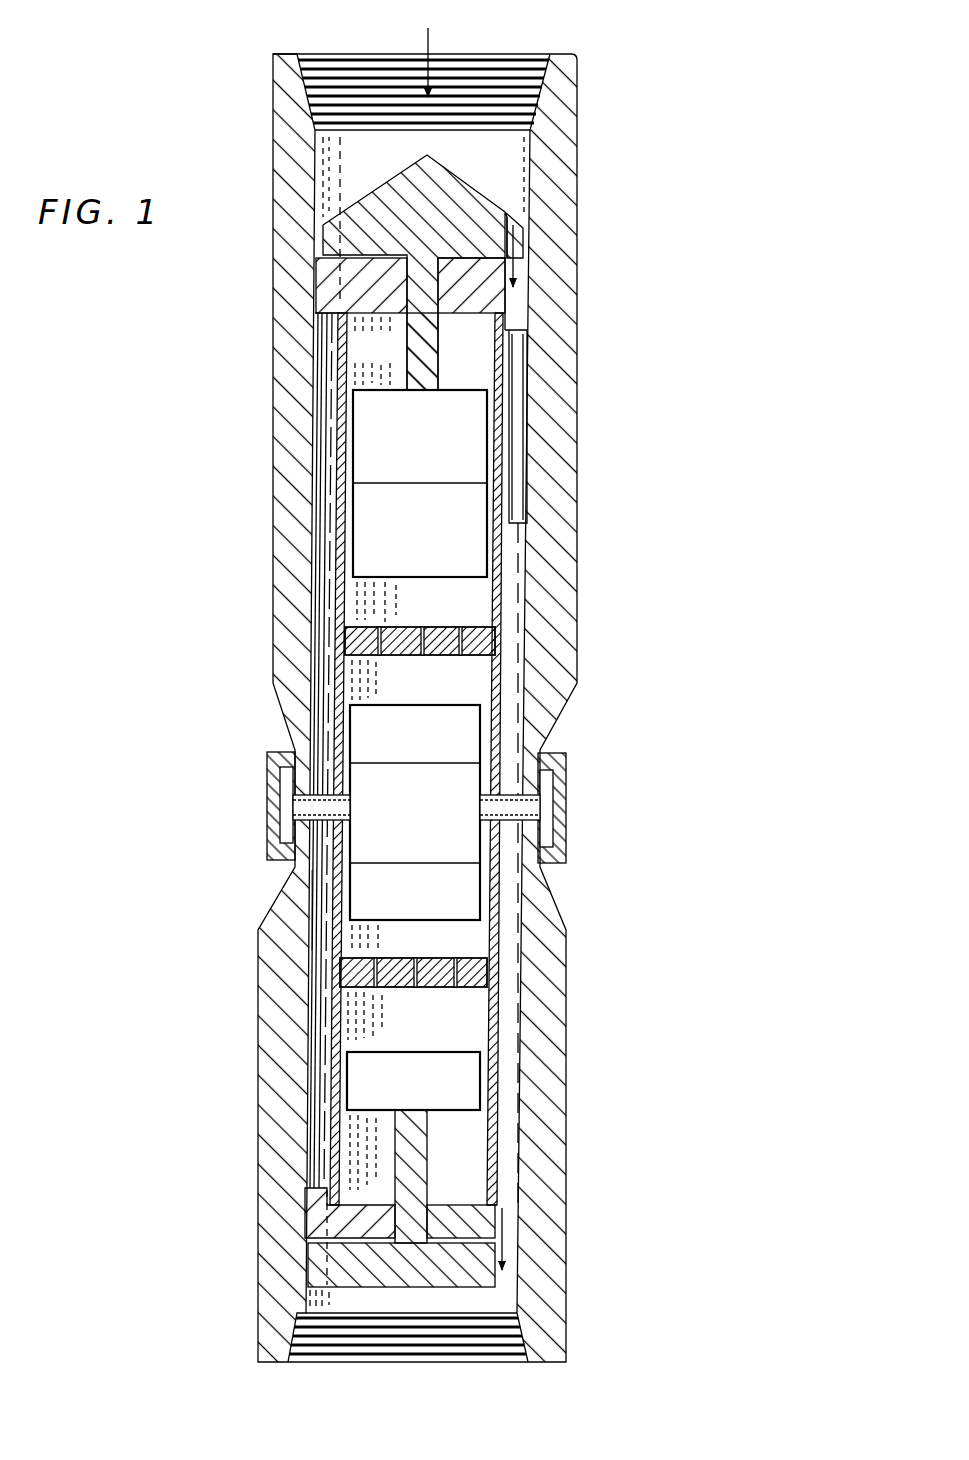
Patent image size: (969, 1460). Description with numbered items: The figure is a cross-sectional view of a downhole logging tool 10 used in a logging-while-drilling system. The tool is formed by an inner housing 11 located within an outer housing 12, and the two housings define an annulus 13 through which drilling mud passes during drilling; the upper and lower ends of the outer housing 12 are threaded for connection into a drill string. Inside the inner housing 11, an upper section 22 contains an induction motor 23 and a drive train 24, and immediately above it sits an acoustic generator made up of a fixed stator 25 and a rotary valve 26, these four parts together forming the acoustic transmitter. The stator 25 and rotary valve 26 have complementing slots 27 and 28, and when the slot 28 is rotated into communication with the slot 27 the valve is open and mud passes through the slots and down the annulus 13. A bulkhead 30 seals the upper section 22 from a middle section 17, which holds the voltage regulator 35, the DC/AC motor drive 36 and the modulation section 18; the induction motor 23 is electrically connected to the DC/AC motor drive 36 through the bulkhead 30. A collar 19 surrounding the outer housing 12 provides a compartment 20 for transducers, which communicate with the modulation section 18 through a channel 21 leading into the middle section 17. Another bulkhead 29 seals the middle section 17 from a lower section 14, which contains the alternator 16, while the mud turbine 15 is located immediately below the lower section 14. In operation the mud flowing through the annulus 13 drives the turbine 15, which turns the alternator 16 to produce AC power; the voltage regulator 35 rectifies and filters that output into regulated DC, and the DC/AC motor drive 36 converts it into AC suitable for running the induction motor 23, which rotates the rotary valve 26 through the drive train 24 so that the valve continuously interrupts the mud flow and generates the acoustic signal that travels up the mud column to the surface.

The downhole logging tool 10 is at (243, 402).
The inner housing 11 is at (503, 570).
The outer housing 12 is at (575, 473).
The annulus 13 is at (513, 532).
The lower section 14 is at (424, 1023).
The mud turbine 15 is at (313, 1260).
The alternator 16 is at (417, 1048).
The middle section 17 is at (403, 690).
The modulation section 18 is at (497, 728).
The collar 19 is at (565, 775).
The compartment 20 is at (543, 833).
The channel 21 is at (530, 805).
The upper section 22 is at (391, 365).
The induction motor 23 is at (423, 578).
The drive train 24 is at (445, 388).
The fixed stator 25 is at (327, 293).
The rotary valve 26 is at (457, 173).
The slot 27 is at (515, 303).
The slot 28 is at (518, 245).
The bulkhead 29 is at (483, 972).
The bulkhead 30 is at (347, 642).
The voltage regulator 35 is at (308, 912).
The DC/AC motor drive 36 is at (353, 848).